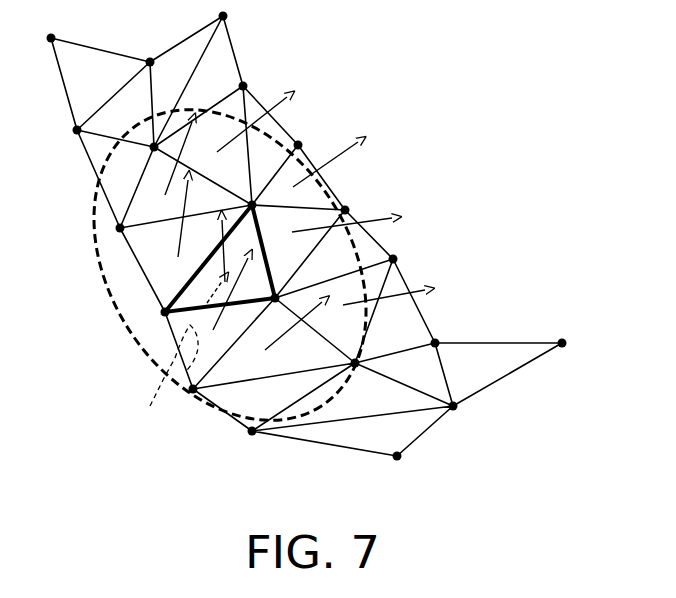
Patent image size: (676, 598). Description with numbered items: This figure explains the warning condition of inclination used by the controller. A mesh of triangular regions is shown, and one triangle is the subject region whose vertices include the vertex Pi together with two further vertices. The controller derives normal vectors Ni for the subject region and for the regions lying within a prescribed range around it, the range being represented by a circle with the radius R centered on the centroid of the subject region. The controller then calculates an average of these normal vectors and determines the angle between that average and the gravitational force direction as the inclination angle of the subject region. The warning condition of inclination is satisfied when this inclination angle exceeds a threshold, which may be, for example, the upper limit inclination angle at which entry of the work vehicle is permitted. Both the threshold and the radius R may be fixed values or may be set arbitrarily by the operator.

The vertex of subject region Pi is at (156, 313).
The normal vector Ni is at (223, 257).
The radius R is at (166, 380).